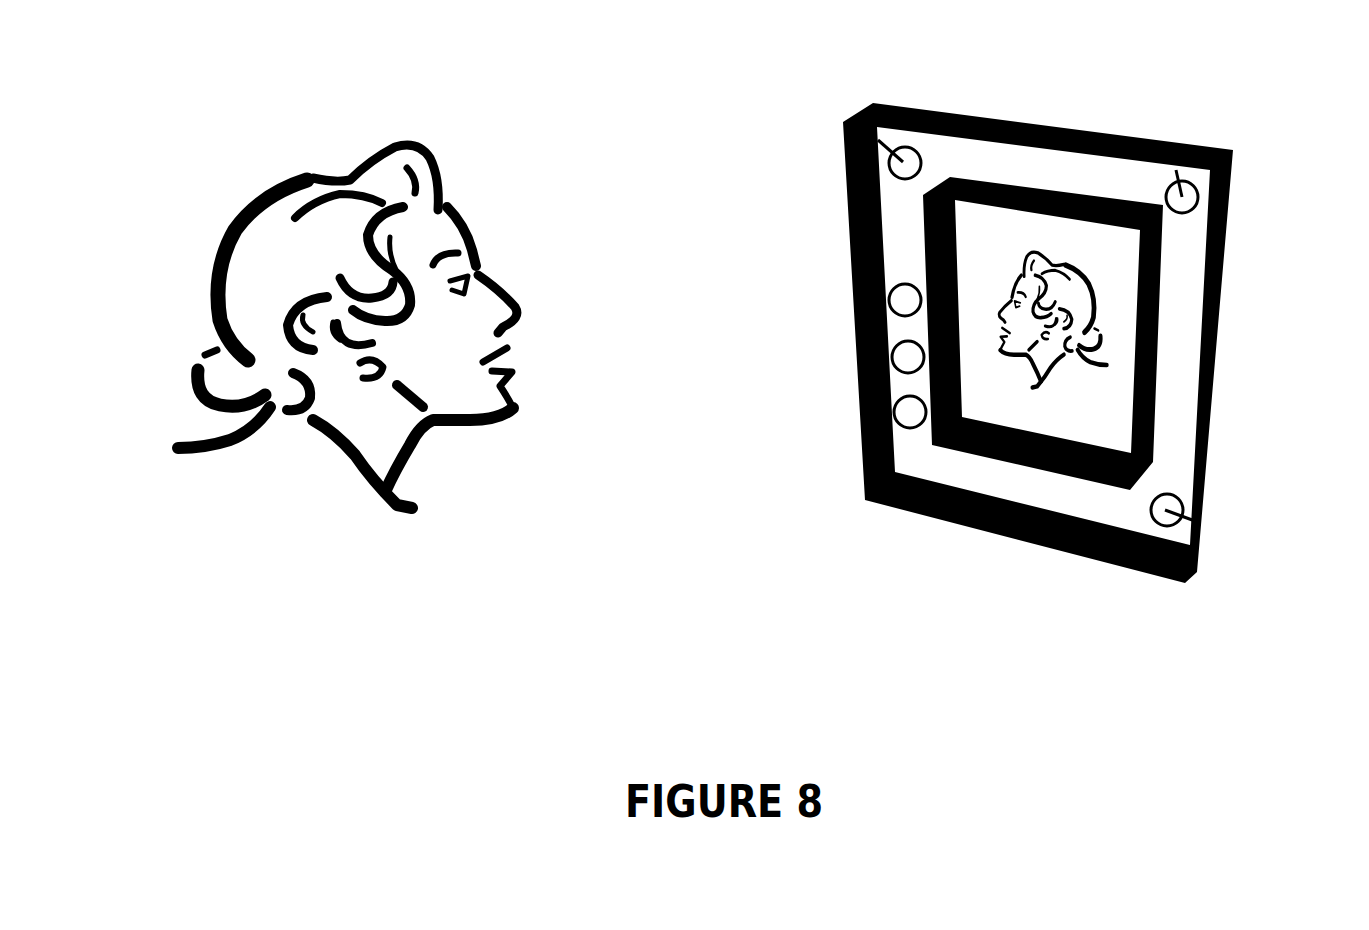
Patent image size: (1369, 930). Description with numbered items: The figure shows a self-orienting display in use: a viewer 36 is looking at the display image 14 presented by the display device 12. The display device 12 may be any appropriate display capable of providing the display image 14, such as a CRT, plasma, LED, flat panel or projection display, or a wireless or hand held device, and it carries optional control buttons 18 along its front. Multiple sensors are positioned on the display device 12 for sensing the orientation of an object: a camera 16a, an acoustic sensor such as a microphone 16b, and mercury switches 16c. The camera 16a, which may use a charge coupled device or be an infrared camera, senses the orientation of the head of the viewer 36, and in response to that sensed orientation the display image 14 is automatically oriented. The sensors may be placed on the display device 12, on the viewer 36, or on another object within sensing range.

The viewer 36 is at (329, 126).
The display device 12 is at (1225, 288).
The display image 14 is at (1087, 407).
The camera 16a is at (903, 162).
The acoustic sensor 16b is at (1182, 197).
The mercury switches 16c is at (1195, 521).
The control buttons 18 is at (835, 292).